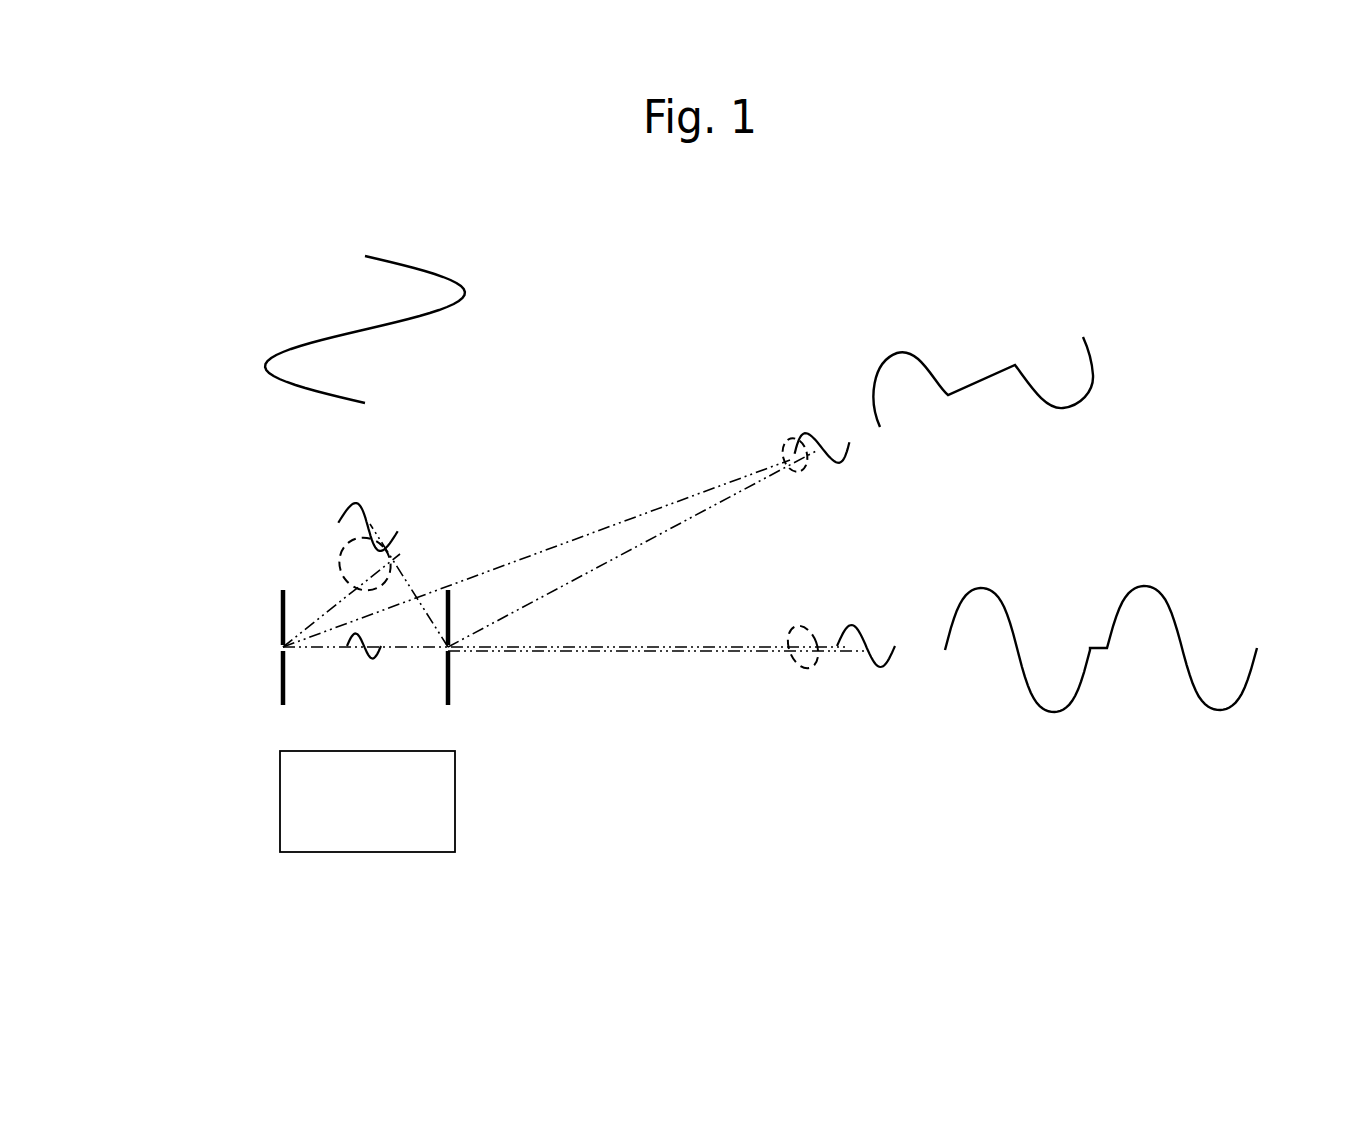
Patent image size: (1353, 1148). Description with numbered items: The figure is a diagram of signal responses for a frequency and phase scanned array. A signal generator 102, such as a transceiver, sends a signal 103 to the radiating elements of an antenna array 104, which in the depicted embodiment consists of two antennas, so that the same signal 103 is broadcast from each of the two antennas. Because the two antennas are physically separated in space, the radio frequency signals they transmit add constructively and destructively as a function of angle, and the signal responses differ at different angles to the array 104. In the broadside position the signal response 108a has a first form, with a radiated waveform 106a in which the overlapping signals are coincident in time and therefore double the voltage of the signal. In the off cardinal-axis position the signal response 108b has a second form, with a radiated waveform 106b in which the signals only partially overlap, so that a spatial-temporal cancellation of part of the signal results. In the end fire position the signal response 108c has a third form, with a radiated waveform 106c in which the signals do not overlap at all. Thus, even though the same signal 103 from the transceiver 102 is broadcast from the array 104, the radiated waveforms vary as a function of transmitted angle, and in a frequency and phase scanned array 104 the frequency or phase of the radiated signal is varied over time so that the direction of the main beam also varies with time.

The signal generator 102 is at (367, 801).
The signal 103 is at (366, 751).
The antenna array 104 is at (305, 647).
The radiated waveform 106a is at (342, 314).
The radiated waveform 106b is at (983, 346).
The radiated waveform 106c is at (1101, 613).
The signal response 108a is at (418, 524).
The signal response 108b is at (746, 403).
The signal response 108c is at (832, 599).